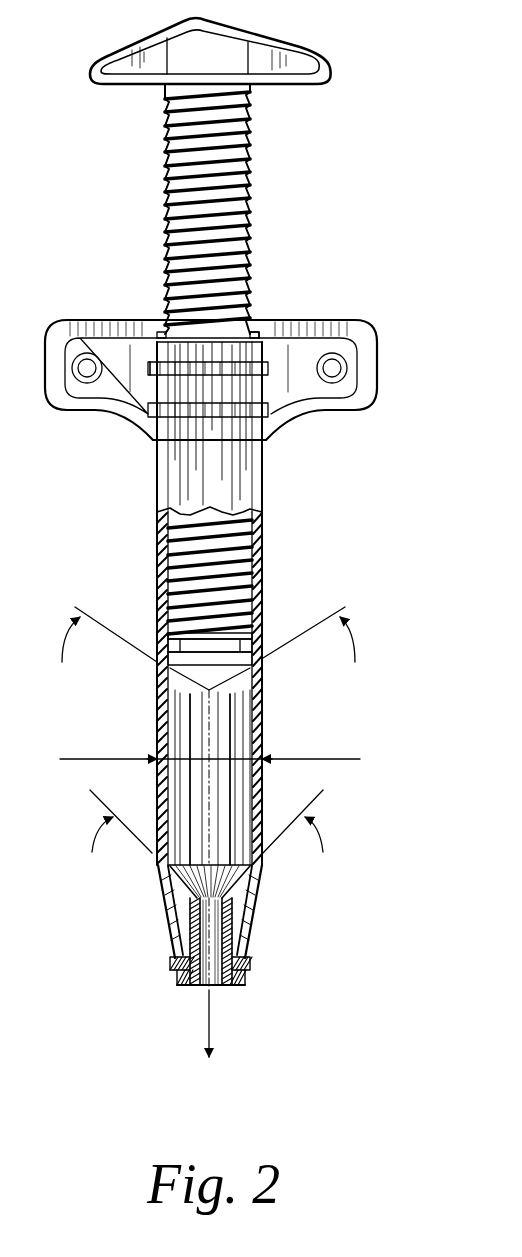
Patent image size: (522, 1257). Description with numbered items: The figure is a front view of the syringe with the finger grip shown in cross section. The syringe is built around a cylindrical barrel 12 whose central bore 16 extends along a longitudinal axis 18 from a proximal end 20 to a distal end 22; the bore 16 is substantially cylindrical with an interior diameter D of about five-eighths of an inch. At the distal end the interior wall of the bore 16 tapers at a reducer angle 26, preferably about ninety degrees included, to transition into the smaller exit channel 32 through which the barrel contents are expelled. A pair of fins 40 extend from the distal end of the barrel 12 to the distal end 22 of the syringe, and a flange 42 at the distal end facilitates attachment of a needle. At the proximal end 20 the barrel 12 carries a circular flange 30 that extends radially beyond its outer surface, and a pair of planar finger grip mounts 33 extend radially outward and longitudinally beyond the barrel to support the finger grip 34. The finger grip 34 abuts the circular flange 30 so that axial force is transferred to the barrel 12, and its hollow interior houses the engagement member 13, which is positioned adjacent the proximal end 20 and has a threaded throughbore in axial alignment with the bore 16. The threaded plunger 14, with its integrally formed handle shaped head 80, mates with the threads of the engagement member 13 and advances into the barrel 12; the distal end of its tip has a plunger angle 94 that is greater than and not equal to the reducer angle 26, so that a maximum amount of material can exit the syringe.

The handle shaped head 80 is at (327, 58).
The threaded plunger 14 is at (250, 148).
The finger grip 34 is at (374, 393).
The finger grip mounts 33 is at (295, 357).
The barrel 12 is at (267, 575).
The circular flange 30 is at (268, 412).
The proximal end 20 is at (150, 358).
The engagement member 13 is at (266, 342).
The central bore 16 is at (234, 740).
The plunger angle 94 is at (210, 655).
The diameter D is at (220, 760).
The reducer angle 26 is at (213, 841).
The fins 40 is at (180, 915).
The exit channel 32 is at (218, 935).
The flange 42 is at (248, 985).
The distal end 22 is at (192, 993).
The longitudinal axis 18 is at (209, 1022).